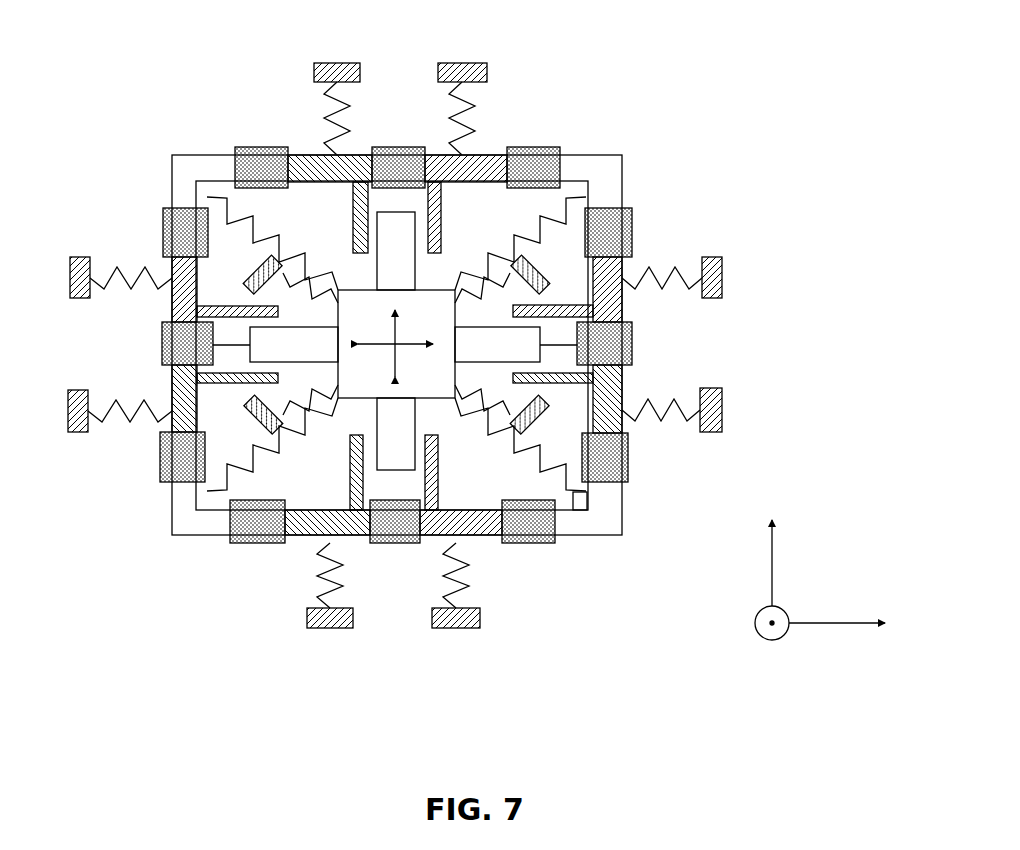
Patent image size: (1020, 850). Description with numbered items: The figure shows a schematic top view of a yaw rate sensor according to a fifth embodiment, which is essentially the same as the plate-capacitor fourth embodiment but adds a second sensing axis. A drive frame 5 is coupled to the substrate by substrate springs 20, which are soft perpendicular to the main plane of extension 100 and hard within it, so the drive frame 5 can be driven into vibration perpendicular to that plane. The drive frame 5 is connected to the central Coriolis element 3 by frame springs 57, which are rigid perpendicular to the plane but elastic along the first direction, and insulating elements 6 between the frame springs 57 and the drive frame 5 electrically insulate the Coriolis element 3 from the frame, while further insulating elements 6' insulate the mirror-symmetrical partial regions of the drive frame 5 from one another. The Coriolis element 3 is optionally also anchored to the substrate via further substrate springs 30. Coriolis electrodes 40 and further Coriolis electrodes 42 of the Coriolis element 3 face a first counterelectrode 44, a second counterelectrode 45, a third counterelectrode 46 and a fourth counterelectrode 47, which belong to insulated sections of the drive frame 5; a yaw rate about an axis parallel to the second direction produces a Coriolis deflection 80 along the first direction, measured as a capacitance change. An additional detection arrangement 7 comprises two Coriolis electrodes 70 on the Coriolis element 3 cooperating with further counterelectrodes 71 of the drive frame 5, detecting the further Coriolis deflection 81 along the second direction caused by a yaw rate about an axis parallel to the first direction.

The Coriolis element 3 is at (377, 310).
The drive frame 5 is at (607, 500).
The insulating elements 6 is at (591, 350).
The further insulating elements 6' is at (657, 457).
The additional detection arrangement 7 is at (227, 290).
The substrate springs 20 is at (327, 115).
The further substrate springs 30 is at (313, 413).
The Coriolis electrodes 40 is at (400, 347).
The further Coriolis electrodes 42 is at (393, 223).
The first counterelectrode 44 is at (352, 230).
The second counterelectrode 45 is at (350, 475).
The third counterelectrode 46 is at (443, 228).
The fourth counterelectrode 47 is at (438, 458).
The frame springs 57 is at (570, 497).
The Coriolis electrodes 70 is at (162, 350).
The further counterelectrodes 71 is at (170, 302).
The Coriolis deflection 80 is at (405, 337).
The further Coriolis deflection 81 is at (403, 355).
The main plane of extension 100 is at (852, 585).